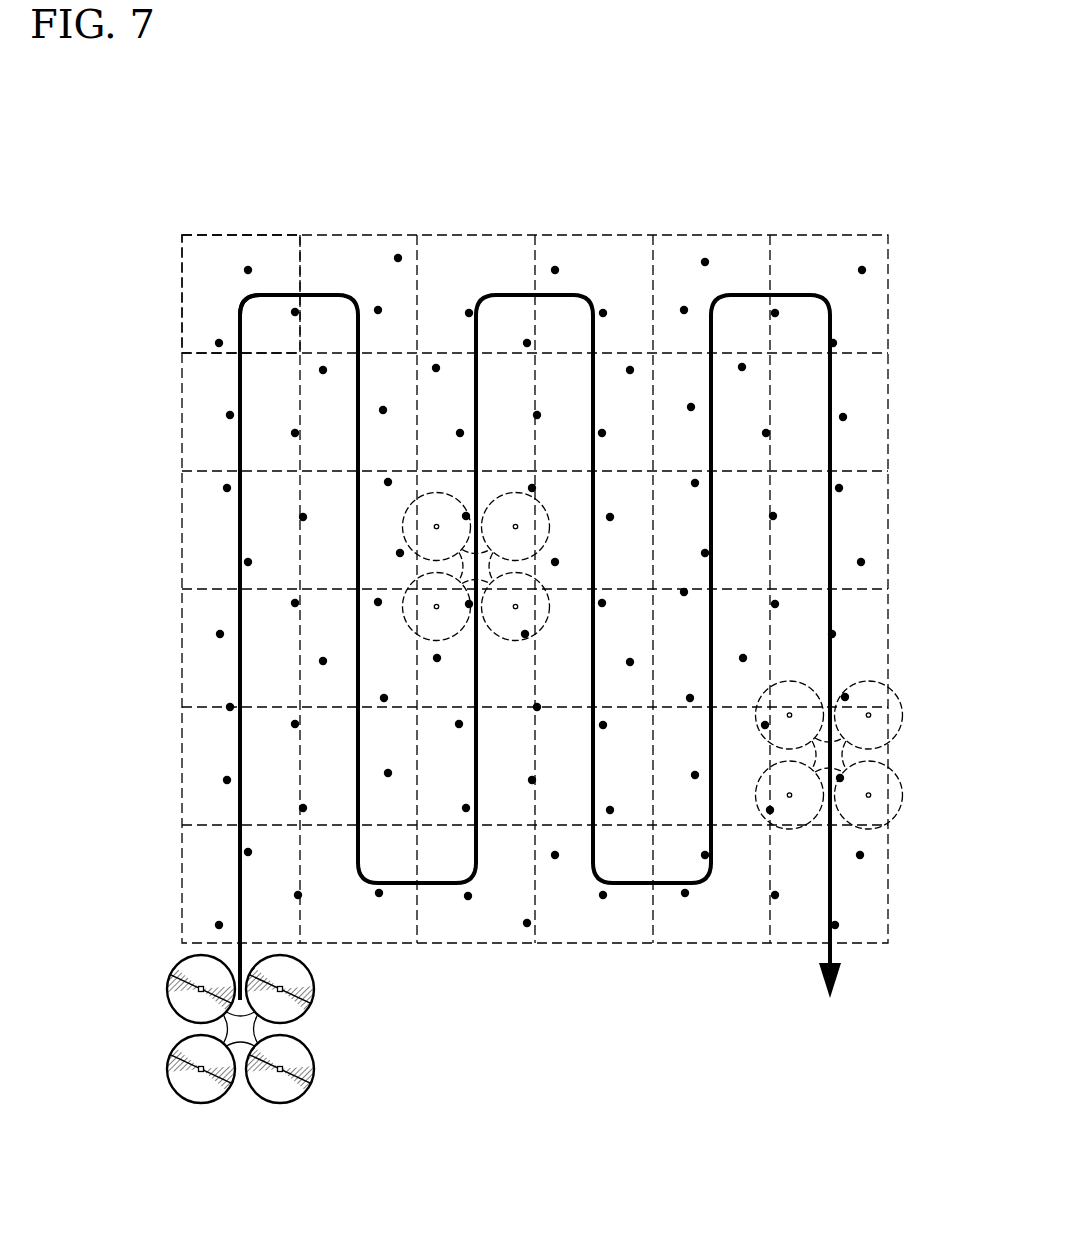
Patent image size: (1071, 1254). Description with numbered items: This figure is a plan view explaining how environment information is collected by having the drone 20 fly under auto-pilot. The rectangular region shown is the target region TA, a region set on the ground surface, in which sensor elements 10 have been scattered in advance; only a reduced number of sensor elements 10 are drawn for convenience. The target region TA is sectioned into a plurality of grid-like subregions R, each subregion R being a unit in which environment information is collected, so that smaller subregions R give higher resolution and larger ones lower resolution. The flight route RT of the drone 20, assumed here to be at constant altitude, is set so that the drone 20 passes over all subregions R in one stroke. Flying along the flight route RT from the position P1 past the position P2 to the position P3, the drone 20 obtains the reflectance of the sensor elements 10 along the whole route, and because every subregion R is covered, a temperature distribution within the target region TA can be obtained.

The sensor element 10 is at (398, 256).
The drone 20 is at (334, 1030).
The target region TA is at (804, 204).
The subregion R is at (202, 412).
The flight route RT is at (239, 740).
The position P1 is at (226, 947).
The position P2 is at (234, 288).
The position P3 is at (847, 952).